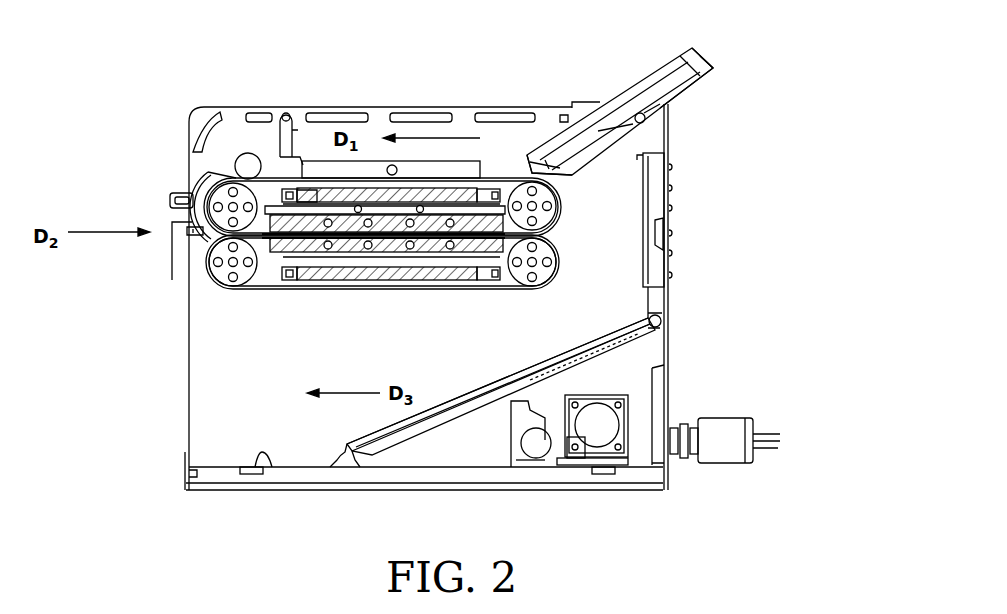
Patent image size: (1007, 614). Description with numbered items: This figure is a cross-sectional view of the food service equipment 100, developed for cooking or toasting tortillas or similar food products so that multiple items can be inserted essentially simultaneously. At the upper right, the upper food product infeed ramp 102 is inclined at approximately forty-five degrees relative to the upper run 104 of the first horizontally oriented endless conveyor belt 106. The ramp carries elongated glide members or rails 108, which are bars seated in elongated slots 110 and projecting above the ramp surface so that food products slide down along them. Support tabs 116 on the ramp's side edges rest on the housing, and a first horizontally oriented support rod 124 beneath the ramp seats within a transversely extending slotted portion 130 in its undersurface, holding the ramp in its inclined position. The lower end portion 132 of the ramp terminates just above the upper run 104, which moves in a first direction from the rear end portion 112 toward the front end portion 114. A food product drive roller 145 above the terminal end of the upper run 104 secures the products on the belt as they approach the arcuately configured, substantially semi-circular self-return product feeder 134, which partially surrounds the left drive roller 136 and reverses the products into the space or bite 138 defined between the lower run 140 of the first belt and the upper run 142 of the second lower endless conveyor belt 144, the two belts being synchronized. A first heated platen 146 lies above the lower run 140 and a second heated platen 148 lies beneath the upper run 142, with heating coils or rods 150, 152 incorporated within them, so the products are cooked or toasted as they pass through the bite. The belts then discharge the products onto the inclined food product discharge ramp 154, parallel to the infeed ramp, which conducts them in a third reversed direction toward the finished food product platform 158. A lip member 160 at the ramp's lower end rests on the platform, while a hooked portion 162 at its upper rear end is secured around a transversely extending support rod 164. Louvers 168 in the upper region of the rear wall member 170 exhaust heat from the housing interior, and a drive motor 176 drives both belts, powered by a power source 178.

The food service equipment 100 is at (731, 99).
The upper food product infeed ramp 102 is at (706, 63).
The upper run of first endless conveyor belt 104 is at (266, 158).
The first horizontally oriented endless conveyor belt 106 is at (558, 210).
The elongated glide members or rails 108 is at (638, 82).
The elongated slots 110 is at (679, 88).
The rear end portion 112 is at (669, 345).
The front end portion 114 is at (186, 403).
The support tabs 116 is at (578, 109).
The first horizontally oriented support rod 124 is at (638, 123).
The slotted portion 130 is at (644, 121).
The lower end portion of upper infeed ramp 132 is at (530, 158).
The self-return product feeder 134 is at (198, 177).
The left drive roller 136 is at (193, 217).
The space or bite 138 is at (203, 246).
The lower run of first upper endless conveyor belt 140 is at (468, 212).
The upper run of second lower endless conveyor belt 142 is at (262, 289).
The second lower endless conveyor belt 144 is at (381, 289).
The food product drive roller 145 is at (190, 130).
The first heated platen 146 is at (311, 200).
The second heated platen 148 is at (475, 234).
The heating coils or rods 150 is at (350, 234).
The heating coils or rods 152 is at (418, 252).
The inclined food product discharge ramp 154 is at (457, 380).
The finished food product platform 158 is at (256, 458).
The lip member 160 is at (347, 452).
The hooked portion 162 is at (662, 322).
The support rod 164 is at (651, 318).
The louvers 168 is at (669, 207).
The rear wall member 170 is at (656, 403).
The drive motor 176 is at (597, 430).
The power source 178 is at (780, 441).